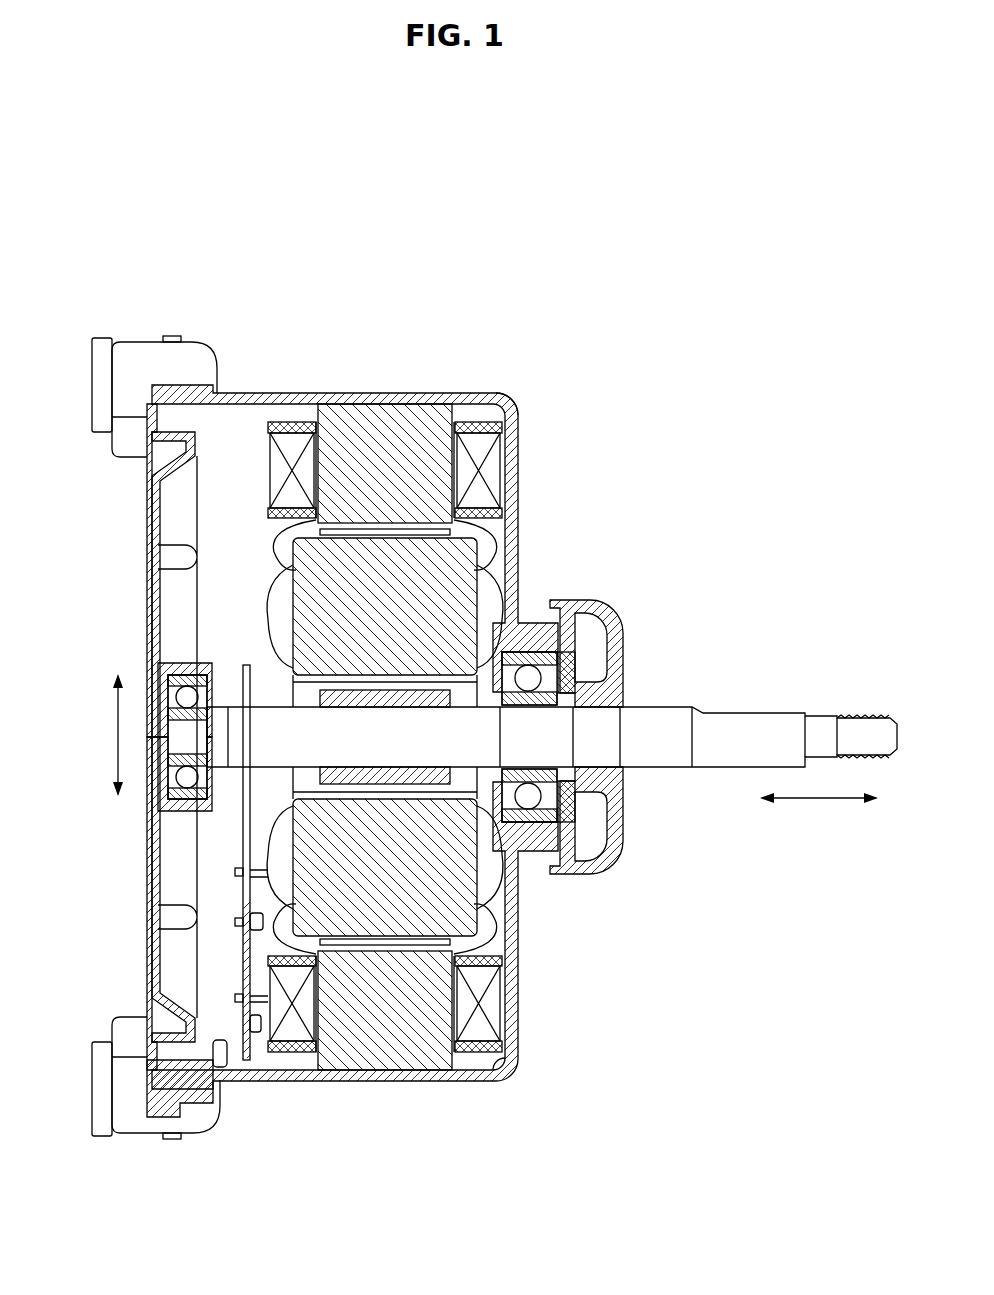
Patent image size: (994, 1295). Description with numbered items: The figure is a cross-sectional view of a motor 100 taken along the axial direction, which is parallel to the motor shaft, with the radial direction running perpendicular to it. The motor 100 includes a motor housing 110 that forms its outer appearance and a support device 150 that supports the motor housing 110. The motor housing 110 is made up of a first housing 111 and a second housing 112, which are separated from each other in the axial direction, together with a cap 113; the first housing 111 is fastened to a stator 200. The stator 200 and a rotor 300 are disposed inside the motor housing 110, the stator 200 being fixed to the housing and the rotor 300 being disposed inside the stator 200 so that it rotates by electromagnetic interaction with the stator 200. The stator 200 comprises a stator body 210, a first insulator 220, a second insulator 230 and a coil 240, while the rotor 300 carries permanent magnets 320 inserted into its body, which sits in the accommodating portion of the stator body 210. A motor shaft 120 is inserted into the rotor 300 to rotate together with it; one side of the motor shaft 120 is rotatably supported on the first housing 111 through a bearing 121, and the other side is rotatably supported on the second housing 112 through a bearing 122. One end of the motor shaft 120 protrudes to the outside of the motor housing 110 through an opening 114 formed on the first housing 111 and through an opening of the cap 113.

The motor 100 is at (488, 220).
The motor housing 110 is at (265, 368).
The first housing 111 is at (488, 408).
The second housing 112 is at (156, 497).
The cap 113 is at (602, 614).
The opening 114 is at (568, 687).
The motor shaft 120 is at (668, 718).
The bearing 121 is at (532, 666).
The bearing 122 is at (183, 782).
The support device 150 is at (135, 354).
The stator 200 is at (376, 1096).
The stator body 210 is at (420, 1050).
The first insulator 220 is at (280, 1048).
The second insulator 230 is at (497, 1065).
The coil 240 is at (494, 463).
The rotor 300 is at (250, 597).
The permanent magnets 320 is at (300, 562).